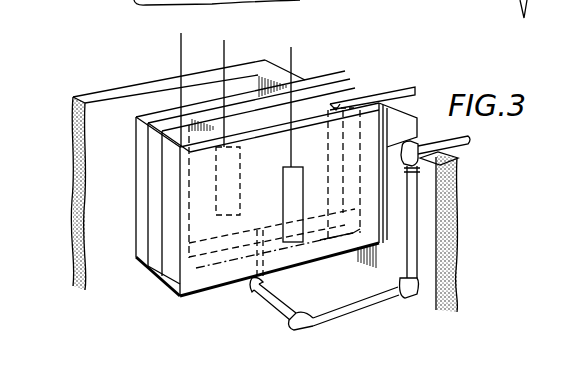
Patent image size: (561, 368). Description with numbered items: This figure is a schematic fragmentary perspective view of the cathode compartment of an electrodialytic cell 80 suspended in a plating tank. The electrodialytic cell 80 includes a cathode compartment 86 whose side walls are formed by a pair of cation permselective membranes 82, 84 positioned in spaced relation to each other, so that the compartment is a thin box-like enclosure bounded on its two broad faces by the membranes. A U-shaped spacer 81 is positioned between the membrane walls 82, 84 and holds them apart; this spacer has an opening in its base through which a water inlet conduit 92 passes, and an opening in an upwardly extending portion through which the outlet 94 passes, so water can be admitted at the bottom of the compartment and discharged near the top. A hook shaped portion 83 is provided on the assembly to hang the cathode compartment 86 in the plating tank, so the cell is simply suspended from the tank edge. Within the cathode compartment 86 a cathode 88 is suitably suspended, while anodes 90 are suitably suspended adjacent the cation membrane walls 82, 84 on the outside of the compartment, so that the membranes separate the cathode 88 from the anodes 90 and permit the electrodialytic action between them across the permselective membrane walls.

The electrodialytic cell 80 is at (344, 78).
The U-shaped spacer 81 is at (156, 143).
The cation permselective membrane 82 is at (301, 97).
The hook shaped portion 83 is at (412, 112).
The cation permselective membrane 84 is at (367, 118).
The cathode compartment 86 is at (206, 129).
The cathode 88 is at (241, 167).
The anode 90 is at (283, 202).
The water inlet conduit 92 is at (322, 311).
The outlet 94 is at (381, 92).